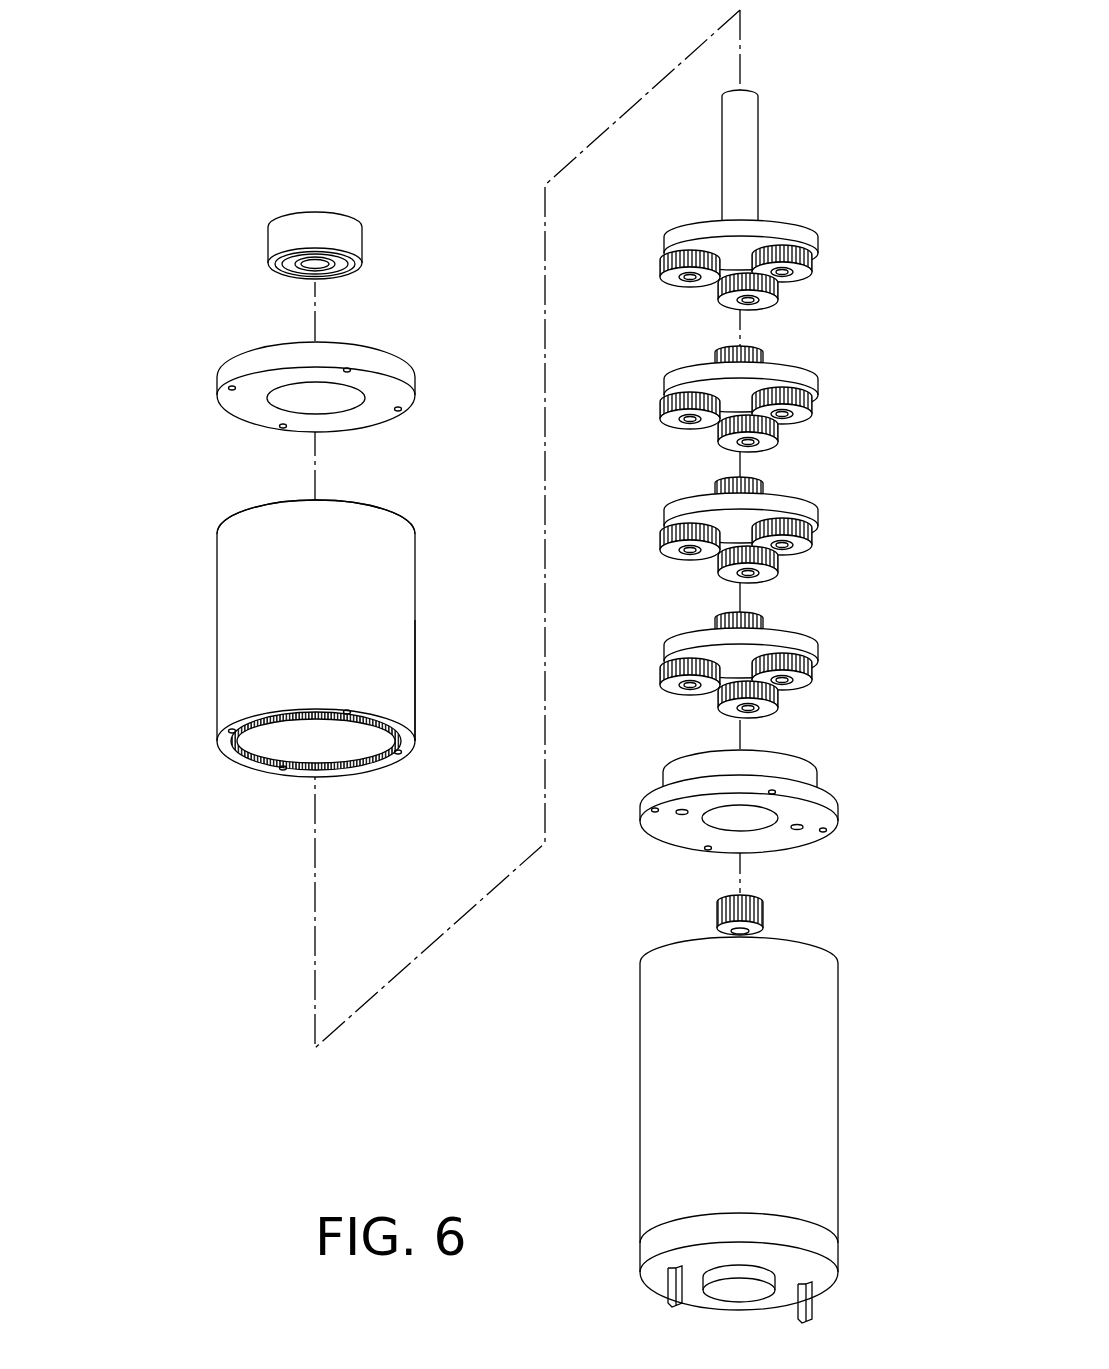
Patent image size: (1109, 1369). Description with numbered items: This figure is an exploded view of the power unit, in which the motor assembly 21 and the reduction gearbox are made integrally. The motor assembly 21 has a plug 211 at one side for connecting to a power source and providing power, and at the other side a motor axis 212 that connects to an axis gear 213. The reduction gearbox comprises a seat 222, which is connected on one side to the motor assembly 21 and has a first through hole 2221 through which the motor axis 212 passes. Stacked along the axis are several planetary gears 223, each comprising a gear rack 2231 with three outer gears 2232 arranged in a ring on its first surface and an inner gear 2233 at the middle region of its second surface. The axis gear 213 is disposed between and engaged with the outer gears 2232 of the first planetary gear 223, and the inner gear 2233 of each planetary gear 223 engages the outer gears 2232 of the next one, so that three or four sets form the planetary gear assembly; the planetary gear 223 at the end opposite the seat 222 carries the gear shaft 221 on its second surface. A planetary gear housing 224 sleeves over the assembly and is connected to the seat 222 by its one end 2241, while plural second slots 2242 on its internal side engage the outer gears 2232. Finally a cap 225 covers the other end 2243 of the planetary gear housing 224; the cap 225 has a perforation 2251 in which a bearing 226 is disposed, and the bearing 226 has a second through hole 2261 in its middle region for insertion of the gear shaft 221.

The motor assembly 21 is at (818, 1057).
The plug 211 is at (813, 1305).
The motor axis 212 is at (763, 927).
The axis gear 213 is at (765, 910).
The gear shaft 221 is at (743, 157).
The seat 222 is at (822, 815).
The first through hole 2221 is at (719, 820).
The planetary gear 223 is at (819, 532).
The gear rack 2231 is at (812, 515).
The outer gear 2232 is at (800, 548).
The inner gear 2233 is at (768, 487).
The planetary gear housing 224 is at (253, 633).
The one end 2241 is at (398, 690).
The second slots 2242 is at (270, 757).
The other end 2243 is at (248, 549).
The cap 225 is at (222, 380).
The perforation 2251 is at (340, 397).
The bearing 226 is at (290, 230).
The second through hole 2261 is at (307, 268).